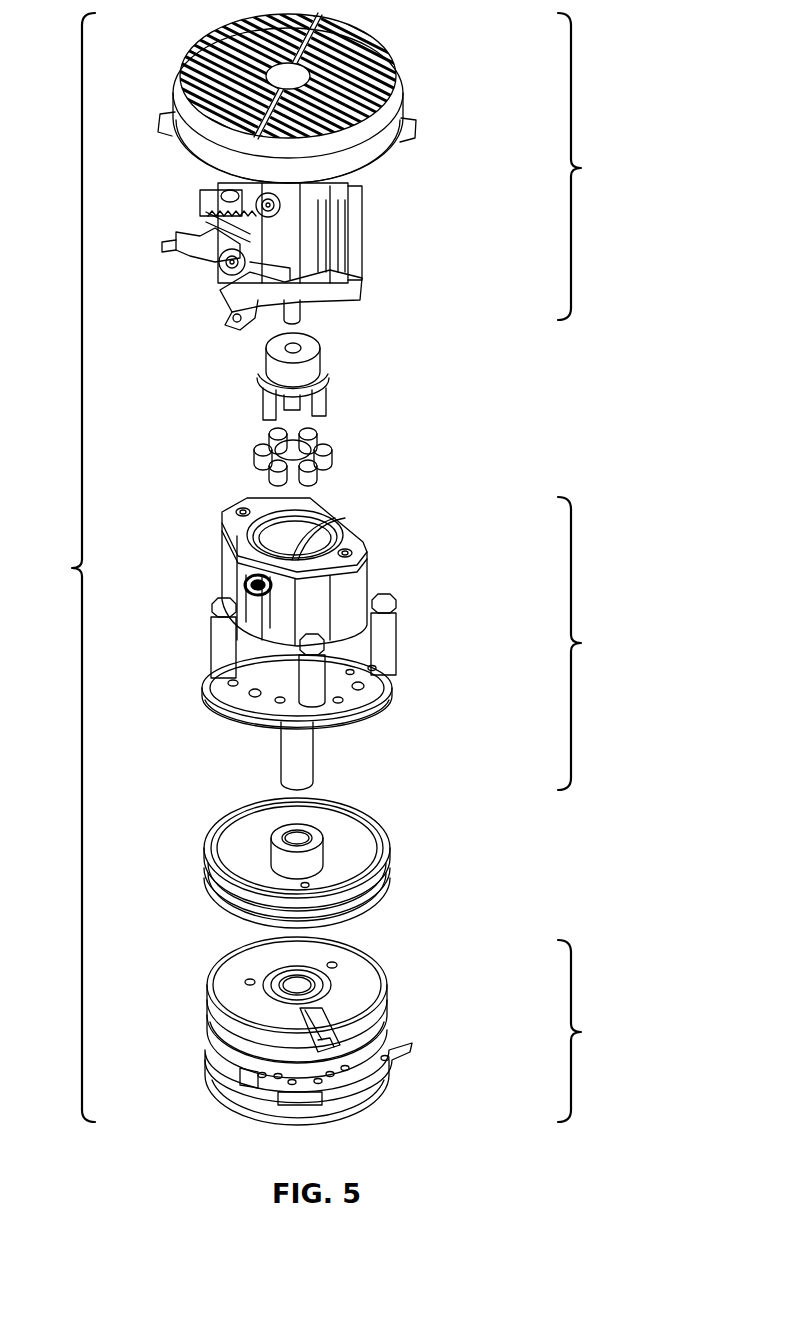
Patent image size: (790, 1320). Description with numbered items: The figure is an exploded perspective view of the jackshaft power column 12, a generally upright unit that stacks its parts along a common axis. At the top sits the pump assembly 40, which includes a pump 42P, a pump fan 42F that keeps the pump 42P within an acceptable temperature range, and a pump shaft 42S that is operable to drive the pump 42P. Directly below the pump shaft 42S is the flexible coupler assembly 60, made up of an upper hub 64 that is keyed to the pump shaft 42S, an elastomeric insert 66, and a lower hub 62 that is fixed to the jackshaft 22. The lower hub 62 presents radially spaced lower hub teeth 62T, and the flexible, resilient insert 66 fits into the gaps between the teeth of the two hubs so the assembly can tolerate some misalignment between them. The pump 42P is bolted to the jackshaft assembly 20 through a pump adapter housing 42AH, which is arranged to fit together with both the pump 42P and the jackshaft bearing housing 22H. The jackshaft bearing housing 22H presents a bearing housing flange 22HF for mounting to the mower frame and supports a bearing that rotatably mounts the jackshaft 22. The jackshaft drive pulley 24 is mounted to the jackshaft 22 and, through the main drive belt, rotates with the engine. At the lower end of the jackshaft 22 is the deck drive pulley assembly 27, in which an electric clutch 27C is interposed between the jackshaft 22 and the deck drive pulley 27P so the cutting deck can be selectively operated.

The jackshaft power column 12 is at (67, 567).
The pump assembly 40 is at (588, 166).
The jackshaft assembly 20 is at (588, 643).
The deck drive pulley assembly 27 is at (588, 1031).
The pump fan 42F is at (388, 118).
The pump 42P is at (345, 230).
The pump shaft 42S is at (283, 314).
The upper hub 64 is at (330, 378).
The elastomeric insert 66 is at (258, 448).
The flexible coupler assembly 60 is at (346, 456).
The lower hub 62 is at (312, 518).
The lower hub teeth 62T is at (345, 532).
The pump adapter housing 42AH is at (222, 522).
The jackshaft bearing housing 22H is at (385, 620).
The bearing housing flange 22HF is at (380, 672).
The jackshaft 22 is at (302, 754).
The jackshaft drive pulley 24 is at (380, 888).
The clutch 27C is at (368, 990).
The deck drive pulley 27P is at (375, 1095).